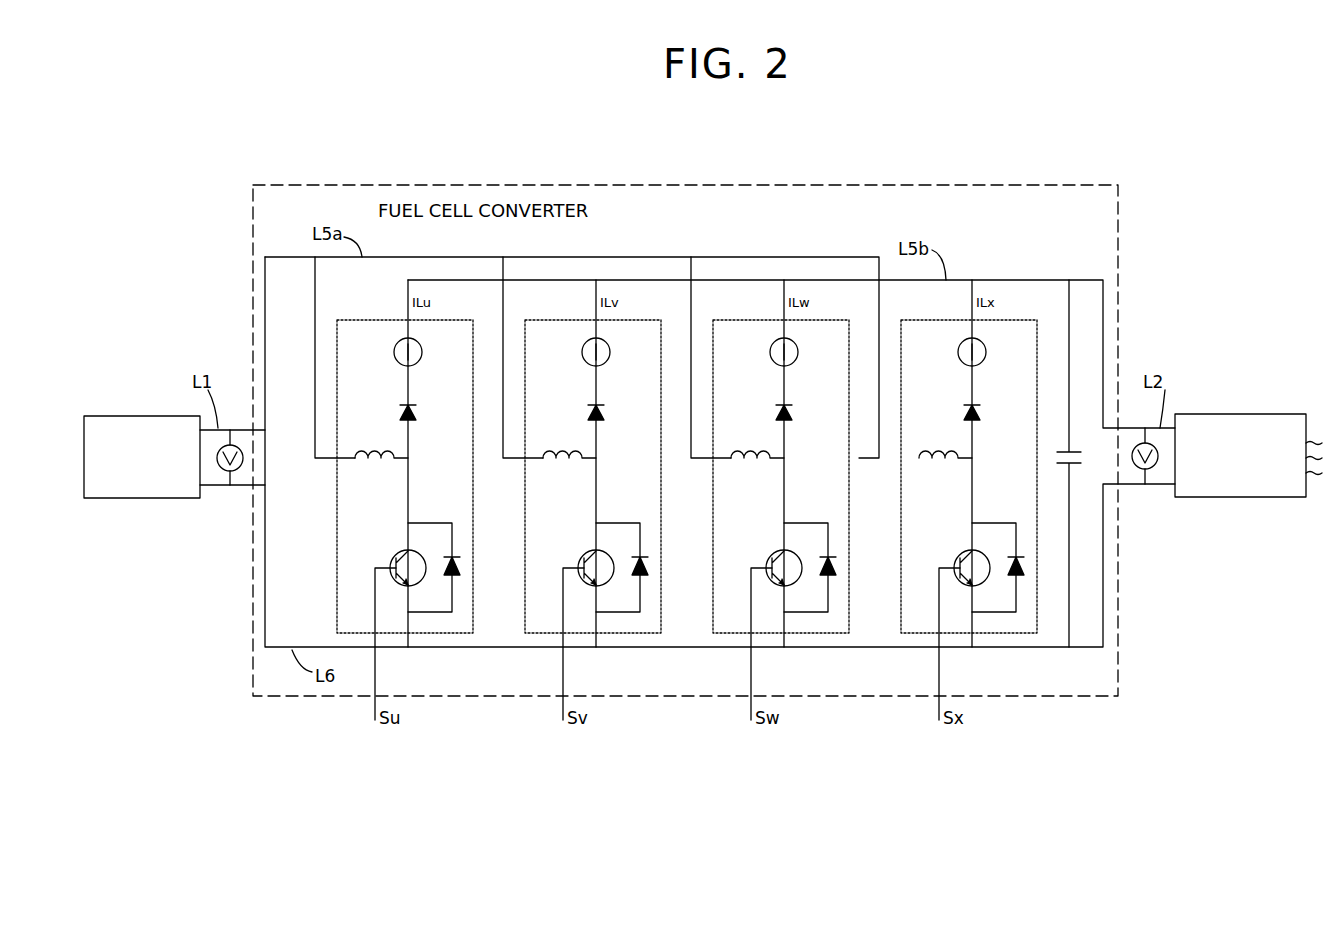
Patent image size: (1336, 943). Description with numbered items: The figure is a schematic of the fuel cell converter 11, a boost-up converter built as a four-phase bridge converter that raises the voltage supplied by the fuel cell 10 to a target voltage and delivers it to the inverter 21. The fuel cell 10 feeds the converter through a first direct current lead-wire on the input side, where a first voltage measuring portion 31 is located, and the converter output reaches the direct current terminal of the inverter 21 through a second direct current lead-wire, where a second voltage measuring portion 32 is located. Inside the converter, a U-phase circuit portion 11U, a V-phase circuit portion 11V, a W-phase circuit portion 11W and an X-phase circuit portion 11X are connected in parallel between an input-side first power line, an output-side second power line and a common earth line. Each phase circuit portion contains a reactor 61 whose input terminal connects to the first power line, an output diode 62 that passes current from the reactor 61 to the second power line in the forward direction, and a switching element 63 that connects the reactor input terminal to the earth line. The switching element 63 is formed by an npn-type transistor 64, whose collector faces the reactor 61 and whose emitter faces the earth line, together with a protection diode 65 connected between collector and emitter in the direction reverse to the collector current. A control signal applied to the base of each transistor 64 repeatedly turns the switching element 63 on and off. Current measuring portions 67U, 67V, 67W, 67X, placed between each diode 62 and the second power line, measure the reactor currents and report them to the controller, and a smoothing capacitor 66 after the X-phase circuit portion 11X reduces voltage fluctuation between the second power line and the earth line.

The fuel cell 10 is at (150, 416).
The fuel cell converter 11 is at (348, 185).
The U-phase circuit portion 11U is at (400, 318).
The V-phase circuit portion 11V is at (588, 318).
The W-phase circuit portion 11W is at (776, 318).
The X-phase circuit portion 11X is at (964, 318).
The inverter 21 is at (1250, 414).
The first voltage measuring portion 31 is at (222, 470).
The second voltage measuring portion 32 is at (1150, 470).
The reactor 61 is at (370, 451).
The output diode 62 is at (413, 405).
The switching element 63 is at (394, 524).
The transistor 64 is at (392, 558).
The protection diode 65 is at (455, 553).
The smoothing capacitor 66 is at (1076, 453).
The current measuring portion 67U is at (397, 346).
The current measuring portion 67V is at (585, 346).
The current measuring portion 67W is at (773, 346).
The current measuring portion 67X is at (961, 346).